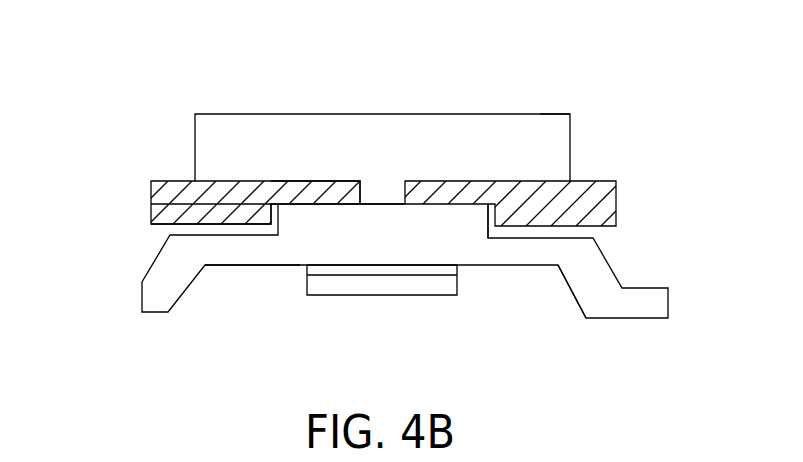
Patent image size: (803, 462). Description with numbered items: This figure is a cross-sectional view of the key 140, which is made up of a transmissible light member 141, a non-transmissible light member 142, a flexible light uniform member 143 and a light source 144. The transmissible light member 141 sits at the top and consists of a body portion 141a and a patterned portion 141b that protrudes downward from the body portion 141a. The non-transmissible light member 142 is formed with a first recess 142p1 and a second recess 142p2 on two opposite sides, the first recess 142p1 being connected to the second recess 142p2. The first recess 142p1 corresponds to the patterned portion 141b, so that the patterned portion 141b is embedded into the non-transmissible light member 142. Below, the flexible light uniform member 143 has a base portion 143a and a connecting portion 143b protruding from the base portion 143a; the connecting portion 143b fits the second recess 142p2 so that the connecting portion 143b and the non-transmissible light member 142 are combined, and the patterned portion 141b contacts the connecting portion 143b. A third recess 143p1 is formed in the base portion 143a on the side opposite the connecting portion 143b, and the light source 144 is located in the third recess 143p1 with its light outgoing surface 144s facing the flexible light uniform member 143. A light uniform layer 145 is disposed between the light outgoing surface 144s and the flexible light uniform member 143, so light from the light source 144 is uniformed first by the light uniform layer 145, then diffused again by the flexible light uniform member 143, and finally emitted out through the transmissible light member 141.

The key 140 is at (735, 53).
The transmissible light member 141 is at (185, 145).
The body portion 141a is at (547, 125).
The patterned portion 141b is at (384, 197).
The non-transmissible light member 142 is at (147, 206).
The first recess 142p1 is at (356, 189).
The second recess 142p2 is at (268, 219).
The flexible light uniform member 143 is at (135, 280).
The base portion 143a is at (257, 252).
The connecting portion 143b is at (468, 218).
The third recess 143p1 is at (543, 295).
The light source 144 is at (377, 280).
The light outgoing surface 144s is at (427, 273).
The light uniform layer 145 is at (348, 265).